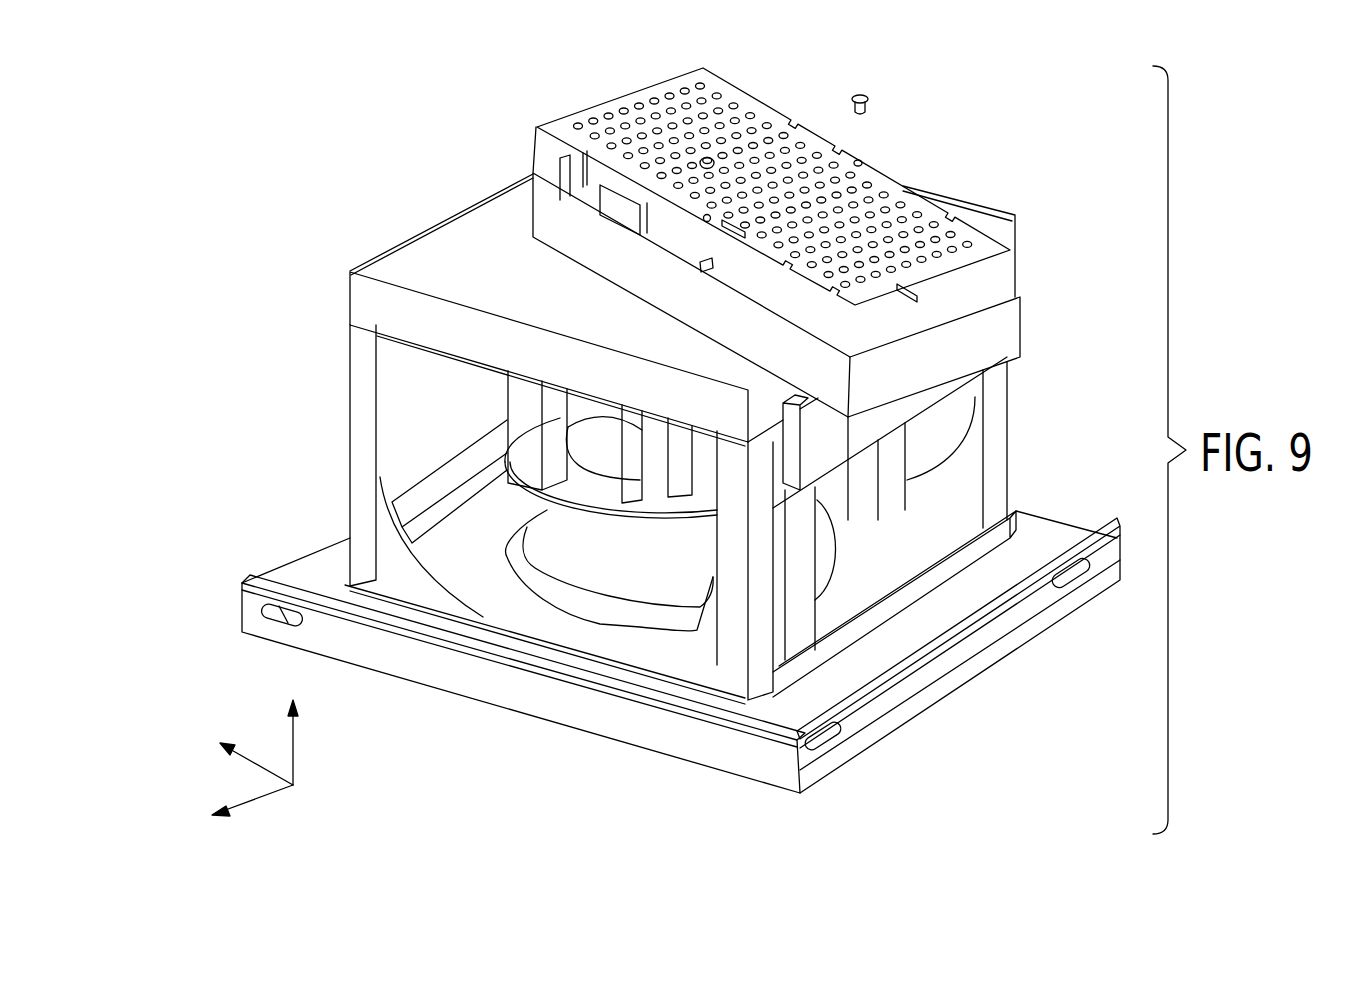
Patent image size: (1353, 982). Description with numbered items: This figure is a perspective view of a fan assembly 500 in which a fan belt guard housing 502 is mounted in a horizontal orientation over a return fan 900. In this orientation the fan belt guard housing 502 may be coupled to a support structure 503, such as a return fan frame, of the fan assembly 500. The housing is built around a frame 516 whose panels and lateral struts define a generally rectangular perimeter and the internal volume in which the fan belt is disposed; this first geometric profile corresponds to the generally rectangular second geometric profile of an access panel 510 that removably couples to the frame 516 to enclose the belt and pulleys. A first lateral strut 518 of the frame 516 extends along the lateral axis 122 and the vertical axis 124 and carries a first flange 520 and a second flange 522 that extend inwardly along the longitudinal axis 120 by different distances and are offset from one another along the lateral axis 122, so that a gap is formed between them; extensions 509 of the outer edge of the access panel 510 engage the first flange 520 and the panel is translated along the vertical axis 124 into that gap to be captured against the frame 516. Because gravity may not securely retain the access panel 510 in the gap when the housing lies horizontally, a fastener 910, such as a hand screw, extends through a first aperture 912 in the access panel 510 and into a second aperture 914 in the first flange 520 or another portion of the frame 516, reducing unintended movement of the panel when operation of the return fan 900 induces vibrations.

The fan assembly 500 is at (208, 473).
The fan belt guard housing 502 is at (1028, 329).
The support structure 503 is at (410, 224).
The extensions 509 is at (747, 92).
The access panel 510 is at (933, 212).
The frame 516 is at (1003, 320).
The first lateral strut 518 is at (540, 195).
The first flange 520 is at (567, 180).
The second flange 522 is at (630, 217).
The return fan 900 is at (326, 449).
The fastener 910 is at (700, 158).
The first aperture 912 is at (861, 160).
The second aperture 914 is at (700, 268).
The longitudinal axis 120 is at (263, 767).
The lateral axis 122 is at (262, 797).
The vertical axis 124 is at (296, 748).